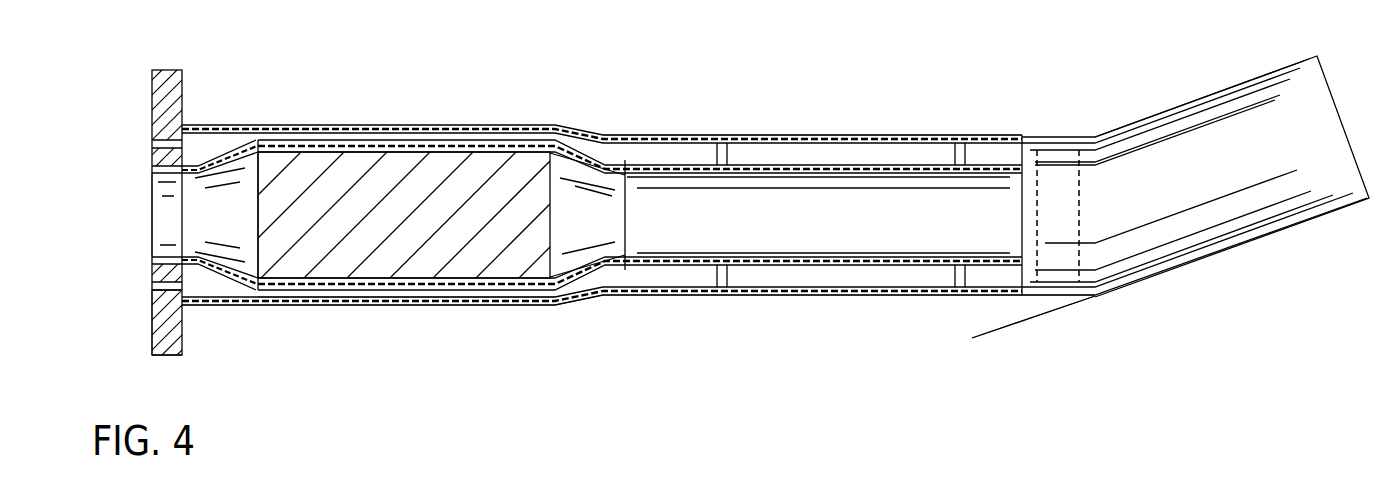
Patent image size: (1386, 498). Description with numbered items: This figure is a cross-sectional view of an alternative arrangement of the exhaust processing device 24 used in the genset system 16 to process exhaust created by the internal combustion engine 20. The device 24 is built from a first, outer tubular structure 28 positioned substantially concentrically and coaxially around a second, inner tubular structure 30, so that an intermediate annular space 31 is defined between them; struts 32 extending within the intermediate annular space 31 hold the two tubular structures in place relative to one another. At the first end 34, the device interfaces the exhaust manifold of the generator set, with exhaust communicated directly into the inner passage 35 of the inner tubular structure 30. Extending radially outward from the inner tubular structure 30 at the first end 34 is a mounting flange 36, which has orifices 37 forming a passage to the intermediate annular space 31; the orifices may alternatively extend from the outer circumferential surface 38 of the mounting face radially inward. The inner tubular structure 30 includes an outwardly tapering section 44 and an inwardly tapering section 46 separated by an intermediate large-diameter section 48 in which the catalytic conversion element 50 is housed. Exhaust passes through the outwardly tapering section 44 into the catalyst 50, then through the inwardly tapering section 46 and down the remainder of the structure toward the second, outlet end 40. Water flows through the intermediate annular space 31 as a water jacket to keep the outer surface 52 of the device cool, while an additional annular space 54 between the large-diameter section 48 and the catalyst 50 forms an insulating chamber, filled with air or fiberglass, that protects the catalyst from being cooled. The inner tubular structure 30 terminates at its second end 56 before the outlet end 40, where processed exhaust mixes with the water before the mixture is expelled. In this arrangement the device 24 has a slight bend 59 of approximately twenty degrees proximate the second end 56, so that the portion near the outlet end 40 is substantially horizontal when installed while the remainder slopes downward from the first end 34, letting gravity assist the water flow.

The genset system 16 is at (1041, 495).
The internal combustion engine 20 is at (977, 303).
The exhaust processing device 24 is at (906, 96).
The first, outer tubular structure 28 is at (840, 131).
The second, inner tubular structure 30 is at (212, 160).
The intermediate annular space 31 is at (212, 278).
The struts 32 is at (720, 142).
The first end 34 is at (149, 318).
The inner passage 35 is at (149, 218).
The mounting flange 36 is at (150, 341).
The orifices 37 is at (167, 300).
The outer circumferential surface 38 is at (160, 66).
The second, outlet end 40 is at (1347, 128).
The outwardly tapering section 44 is at (240, 262).
The inwardly tapering section 46 is at (583, 266).
The intermediate large-diameter section 48 is at (395, 309).
The catalytic conversion element 50 is at (390, 173).
The outer surface 52 is at (1052, 133).
The additional annular space 54 is at (444, 137).
The second end 56 is at (1063, 226).
The bend 59 is at (1073, 318).